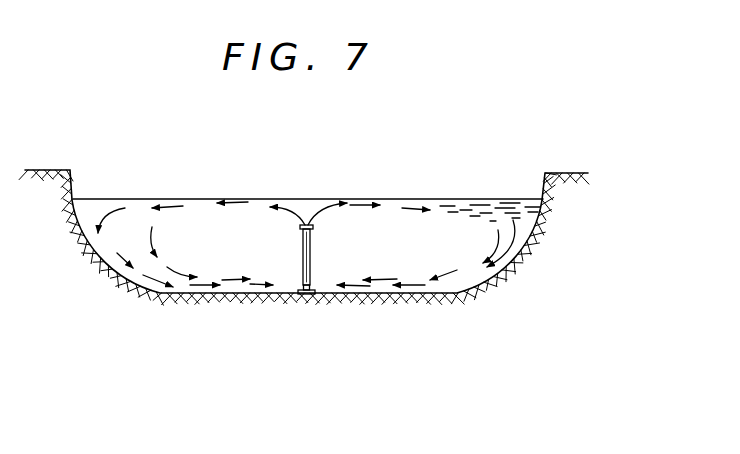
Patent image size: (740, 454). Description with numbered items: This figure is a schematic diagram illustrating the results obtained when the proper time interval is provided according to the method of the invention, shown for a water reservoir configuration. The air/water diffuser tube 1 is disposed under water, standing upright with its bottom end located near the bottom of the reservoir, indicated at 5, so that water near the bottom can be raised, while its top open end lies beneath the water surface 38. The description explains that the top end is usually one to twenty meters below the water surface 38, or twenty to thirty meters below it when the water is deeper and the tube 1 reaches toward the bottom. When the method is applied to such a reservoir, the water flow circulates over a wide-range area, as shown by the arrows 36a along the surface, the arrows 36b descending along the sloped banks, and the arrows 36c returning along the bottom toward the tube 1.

The tube 1 is at (306, 255).
The pond bottom 5 is at (255, 295).
The water surface 38 is at (108, 197).
The arrows 36a is at (234, 203).
The arrows 36b is at (515, 227).
The arrows 36c is at (205, 287).